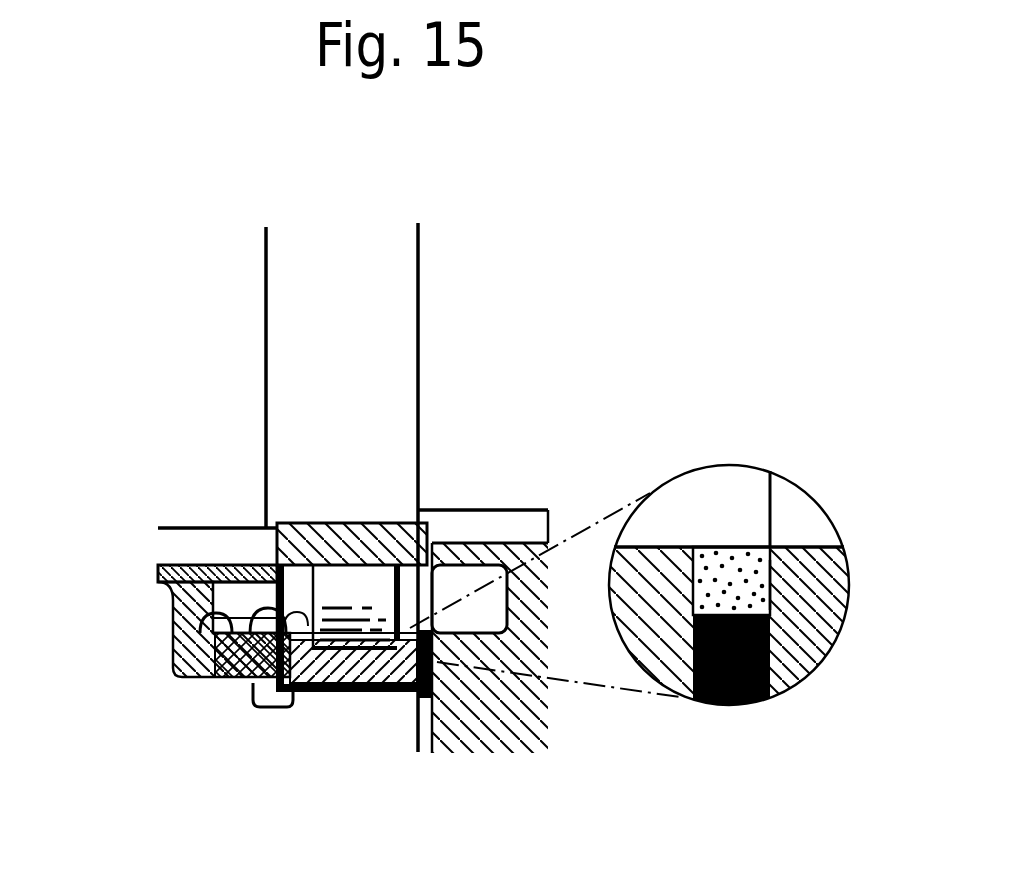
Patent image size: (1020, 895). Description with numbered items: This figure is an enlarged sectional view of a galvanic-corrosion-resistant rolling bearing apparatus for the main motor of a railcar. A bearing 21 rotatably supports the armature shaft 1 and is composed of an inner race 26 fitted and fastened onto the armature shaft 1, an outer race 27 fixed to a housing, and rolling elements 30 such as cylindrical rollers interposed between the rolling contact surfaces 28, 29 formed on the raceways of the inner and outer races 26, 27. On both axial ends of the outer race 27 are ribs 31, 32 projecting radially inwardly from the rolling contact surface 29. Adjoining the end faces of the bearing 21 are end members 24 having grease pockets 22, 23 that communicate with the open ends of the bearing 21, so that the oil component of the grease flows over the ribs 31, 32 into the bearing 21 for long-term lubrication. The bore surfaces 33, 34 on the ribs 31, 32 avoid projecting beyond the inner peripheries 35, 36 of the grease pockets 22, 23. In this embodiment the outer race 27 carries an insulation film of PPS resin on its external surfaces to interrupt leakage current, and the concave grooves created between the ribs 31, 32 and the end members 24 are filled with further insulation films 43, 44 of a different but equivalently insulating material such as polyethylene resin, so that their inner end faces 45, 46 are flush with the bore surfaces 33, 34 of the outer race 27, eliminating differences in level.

The armature shaft 1 is at (244, 252).
The bearing 21 is at (288, 518).
The grease pocket 22 is at (212, 600).
The grease pocket 23 is at (478, 585).
The end member 24 is at (193, 563).
The inner race 26 is at (322, 522).
The outer race 27 is at (323, 695).
The rolling contact surface 28 is at (374, 578).
The rolling contact surface 29 is at (363, 697).
The rolling elements 30 is at (437, 545).
The rib 31 is at (303, 697).
The rib 32 is at (667, 665).
The bore surface 33 is at (230, 648).
The bore surface 34 is at (663, 547).
The inner periphery 35 is at (225, 617).
The inner periphery 36 is at (800, 547).
The insulation film 43 is at (250, 672).
The insulation film 44 is at (753, 575).
The inner end face 45 is at (270, 635).
The inner end face 46 is at (740, 547).